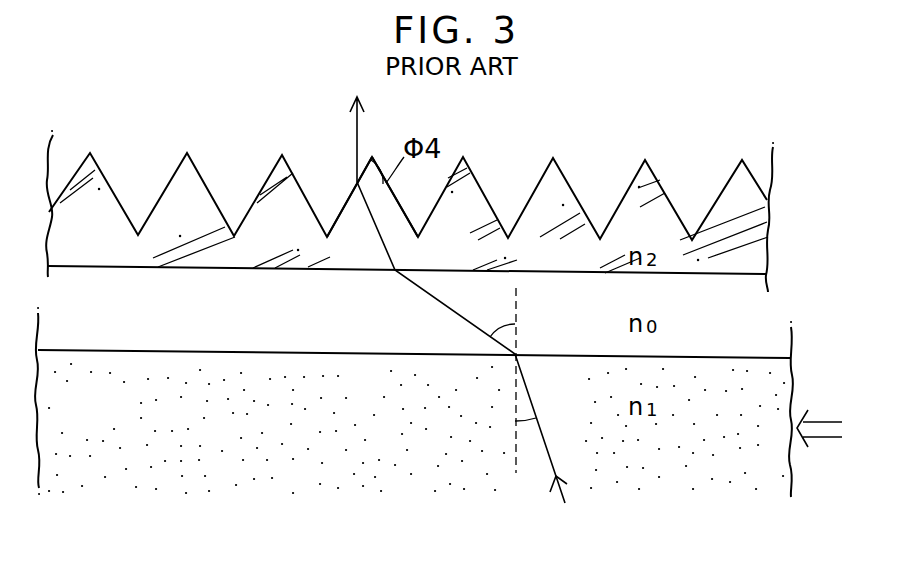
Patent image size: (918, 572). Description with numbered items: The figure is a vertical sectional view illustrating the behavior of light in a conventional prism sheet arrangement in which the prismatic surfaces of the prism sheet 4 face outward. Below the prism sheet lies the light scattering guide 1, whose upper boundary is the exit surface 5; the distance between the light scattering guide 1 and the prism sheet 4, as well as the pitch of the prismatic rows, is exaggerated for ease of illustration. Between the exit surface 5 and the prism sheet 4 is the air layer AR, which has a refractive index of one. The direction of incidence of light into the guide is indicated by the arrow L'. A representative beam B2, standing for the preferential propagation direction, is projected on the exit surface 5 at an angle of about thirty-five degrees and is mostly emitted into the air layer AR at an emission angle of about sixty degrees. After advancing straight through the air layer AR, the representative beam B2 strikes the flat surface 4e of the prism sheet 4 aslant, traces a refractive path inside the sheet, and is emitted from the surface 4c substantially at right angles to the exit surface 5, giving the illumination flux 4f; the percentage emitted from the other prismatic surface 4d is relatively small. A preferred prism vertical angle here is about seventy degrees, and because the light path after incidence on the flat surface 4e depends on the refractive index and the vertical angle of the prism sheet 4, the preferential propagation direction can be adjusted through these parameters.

The light scattering guide 1 is at (125, 422).
The prism sheet 4 is at (108, 238).
The surface 4c is at (345, 207).
The surface 4d is at (400, 203).
The flat surface 4e is at (697, 275).
The illumination flux 4f is at (359, 123).
The exit surface 5 is at (229, 350).
The air layer AR is at (125, 327).
The representative beam B2 is at (474, 361).
The arrow indicating direction of incidence L' is at (835, 428).